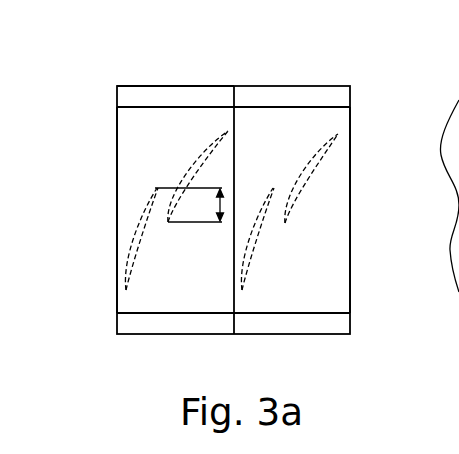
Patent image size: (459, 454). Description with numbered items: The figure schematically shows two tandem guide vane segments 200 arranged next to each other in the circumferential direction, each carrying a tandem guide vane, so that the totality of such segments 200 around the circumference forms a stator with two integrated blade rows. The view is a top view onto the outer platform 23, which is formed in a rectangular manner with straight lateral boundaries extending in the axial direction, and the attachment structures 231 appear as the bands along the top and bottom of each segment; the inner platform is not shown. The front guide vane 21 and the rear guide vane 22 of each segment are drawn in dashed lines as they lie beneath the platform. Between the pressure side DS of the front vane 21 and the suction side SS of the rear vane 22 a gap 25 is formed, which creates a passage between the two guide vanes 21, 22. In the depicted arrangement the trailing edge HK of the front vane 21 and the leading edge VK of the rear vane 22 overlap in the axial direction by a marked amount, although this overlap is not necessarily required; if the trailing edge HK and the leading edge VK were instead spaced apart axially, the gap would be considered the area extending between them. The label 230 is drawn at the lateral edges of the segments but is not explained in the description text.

The tandem guide vane segment 200 is at (111, 284).
The blade segment 230 is at (118, 200).
The attachment structure 231 is at (208, 98).
The outer platform 23 is at (131, 123).
The front guide vane 21 is at (131, 273).
The rear guide vane 22 is at (194, 160).
The gap 25 is at (160, 215).
The trailing edge HK is at (158, 187).
The suction side SS is at (194, 160).
The pressure side DS is at (186, 222).
The leading edge VK is at (167, 224).